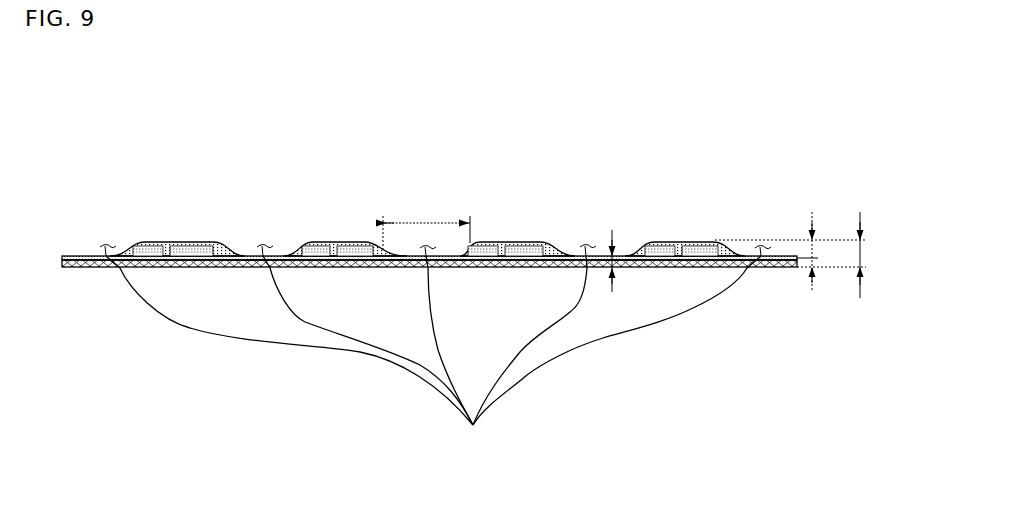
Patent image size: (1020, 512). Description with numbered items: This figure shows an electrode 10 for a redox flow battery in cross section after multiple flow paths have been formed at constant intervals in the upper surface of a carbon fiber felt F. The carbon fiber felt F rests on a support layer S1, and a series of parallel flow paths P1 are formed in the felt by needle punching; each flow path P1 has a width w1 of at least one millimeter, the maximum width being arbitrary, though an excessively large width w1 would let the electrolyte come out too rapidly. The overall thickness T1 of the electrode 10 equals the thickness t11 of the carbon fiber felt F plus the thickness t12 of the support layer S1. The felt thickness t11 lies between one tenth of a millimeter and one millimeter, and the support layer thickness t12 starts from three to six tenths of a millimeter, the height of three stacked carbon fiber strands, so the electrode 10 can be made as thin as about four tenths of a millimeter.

The electrode for a redox flow battery 10 is at (179, 168).
The support layer S1 is at (772, 278).
The carbon fiber felt F is at (668, 236).
The flow path P1 is at (433, 355).
The width of the flow path w1 is at (426, 227).
The thickness of the support layer t12 is at (604, 252).
The thickness of the carbon fiber felt t11 is at (822, 252).
The thickness of the electrode T1 is at (803, 255).